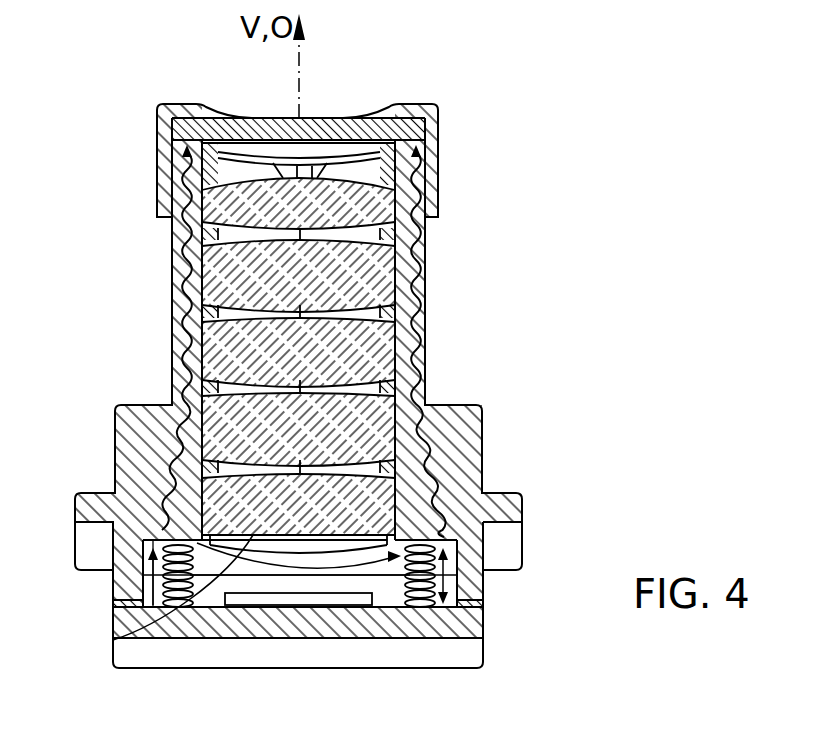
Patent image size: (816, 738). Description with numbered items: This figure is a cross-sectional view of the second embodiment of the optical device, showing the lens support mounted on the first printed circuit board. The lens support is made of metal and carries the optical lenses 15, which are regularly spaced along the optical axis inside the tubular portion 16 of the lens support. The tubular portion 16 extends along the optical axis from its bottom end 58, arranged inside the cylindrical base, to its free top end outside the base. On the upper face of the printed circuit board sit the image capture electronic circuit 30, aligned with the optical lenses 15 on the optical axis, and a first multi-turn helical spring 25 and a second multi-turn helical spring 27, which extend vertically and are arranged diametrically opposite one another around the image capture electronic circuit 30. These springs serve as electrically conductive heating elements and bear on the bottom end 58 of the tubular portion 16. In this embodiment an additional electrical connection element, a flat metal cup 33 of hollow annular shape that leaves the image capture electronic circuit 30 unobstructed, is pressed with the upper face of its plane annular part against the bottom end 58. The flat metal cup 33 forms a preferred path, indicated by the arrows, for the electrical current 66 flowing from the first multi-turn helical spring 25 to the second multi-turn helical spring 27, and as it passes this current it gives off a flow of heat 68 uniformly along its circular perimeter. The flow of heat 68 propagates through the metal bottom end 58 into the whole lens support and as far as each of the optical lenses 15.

The optical lenses 15 is at (318, 237).
The tubular portion 16 is at (166, 345).
The flow of heat 68 is at (183, 275).
The first multi-turn helical spring 25 is at (210, 538).
The bottom end of the tubular portion 58 is at (462, 553).
The second multi-turn helical spring 27 is at (447, 577).
The electrical current 66 is at (113, 633).
The image capture electronic circuit 30 is at (257, 590).
The flat metal cup 33 is at (378, 583).